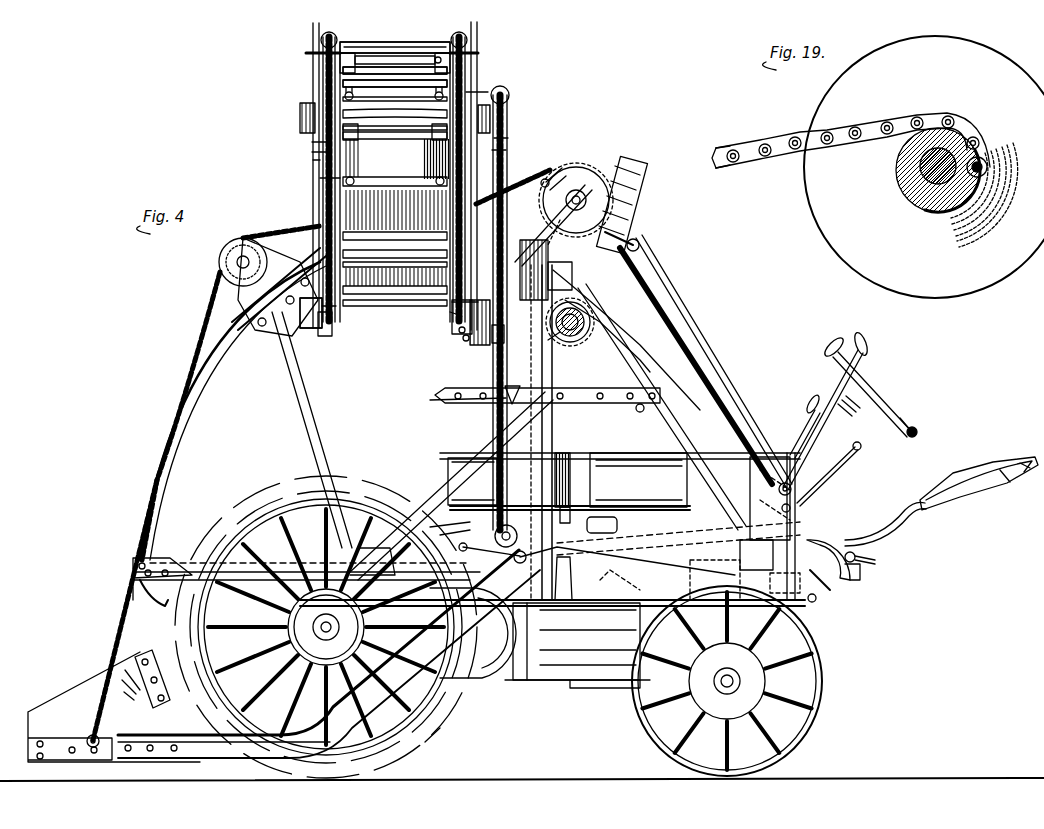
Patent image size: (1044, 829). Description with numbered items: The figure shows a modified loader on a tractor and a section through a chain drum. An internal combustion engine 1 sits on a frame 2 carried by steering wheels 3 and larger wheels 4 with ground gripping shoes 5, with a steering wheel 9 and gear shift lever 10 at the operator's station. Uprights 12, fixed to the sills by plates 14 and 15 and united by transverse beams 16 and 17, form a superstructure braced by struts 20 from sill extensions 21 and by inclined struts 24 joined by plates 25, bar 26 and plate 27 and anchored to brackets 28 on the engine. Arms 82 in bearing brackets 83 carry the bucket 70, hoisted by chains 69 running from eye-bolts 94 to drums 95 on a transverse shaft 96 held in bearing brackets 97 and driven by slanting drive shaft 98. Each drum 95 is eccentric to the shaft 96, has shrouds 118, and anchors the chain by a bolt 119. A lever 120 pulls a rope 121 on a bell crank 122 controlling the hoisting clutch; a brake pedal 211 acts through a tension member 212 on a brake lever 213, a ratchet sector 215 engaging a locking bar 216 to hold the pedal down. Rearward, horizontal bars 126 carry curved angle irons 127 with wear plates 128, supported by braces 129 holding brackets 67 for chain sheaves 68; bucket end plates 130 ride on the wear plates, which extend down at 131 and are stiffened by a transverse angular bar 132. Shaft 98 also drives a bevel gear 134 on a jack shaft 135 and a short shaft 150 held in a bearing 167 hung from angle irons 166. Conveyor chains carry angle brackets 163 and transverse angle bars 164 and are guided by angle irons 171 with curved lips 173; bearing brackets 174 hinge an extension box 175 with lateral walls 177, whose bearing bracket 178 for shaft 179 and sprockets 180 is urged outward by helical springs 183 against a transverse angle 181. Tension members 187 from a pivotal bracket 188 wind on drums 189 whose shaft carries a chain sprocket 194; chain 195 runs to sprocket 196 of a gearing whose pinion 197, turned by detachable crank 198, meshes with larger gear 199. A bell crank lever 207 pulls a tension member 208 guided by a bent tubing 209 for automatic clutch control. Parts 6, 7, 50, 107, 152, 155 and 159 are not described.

In FIG. 4, the engine 1 is at (584, 676).
In FIG. 4, the frame member 2 is at (600, 582).
In FIG. 4, the rear wheel 3 is at (822, 682).
In FIG. 4, the frame bar 4 is at (420, 742).
In FIG. 4, the frame bar 5 is at (446, 718).
In FIG. 4, the front wheel hub 6 is at (300, 636).
In FIG. 4, the seat 7 is at (986, 460).
In FIG. 4, the handle grip 9 is at (916, 430).
In FIG. 4, the control rod 10 is at (862, 448).
In FIG. 4, the upright post 12 is at (540, 372).
In FIG. 4, the frame bar 14 is at (564, 576).
In FIG. 4, the brace bar 15 is at (704, 446).
In FIG. 4, the bracket 16 is at (560, 276).
In FIG. 4, the bracket 17 is at (496, 346).
In FIG. 4, the bracket 20 is at (532, 536).
In FIG. 4, the engine casing 21 is at (550, 606).
In FIG. 4, the diagonal brace 24 is at (424, 472).
In FIG. 4, the cross plate 25 is at (558, 406).
In FIG. 4, the bracket 26 is at (594, 406).
In FIG. 4, the bolt 27 is at (632, 412).
In FIG. 4, the link 28 is at (440, 526).
In FIG. 4, the axle bracket 50 is at (383, 562).
In FIG. 4, the bracket arm 67 is at (258, 284).
In FIG. 4, the idler sprocket 68 is at (219, 260).
In FIG. 4, the drive chain 69 is at (208, 298).
In FIG. 19, the drive chain 69 is at (719, 169).
In FIG. 4, the draft bar 70 is at (58, 690).
In FIG. 4, the lower frame rail 82 is at (196, 732).
In FIG. 4, the connecting rod 83 is at (552, 548).
In FIG. 4, the chain anchor 94 is at (96, 732).
In FIG. 4, the sprocket 95 is at (578, 192).
In FIG. 19, the sprocket 95 is at (804, 174).
In FIG. 4, the sprocket hub 96 is at (608, 190).
In FIG. 19, the sprocket hub 96 is at (925, 166).
In FIG. 4, the support bar 97 is at (532, 244).
In FIG. 4, the link 98 is at (572, 344).
In FIG. 4, the gear housing 107 is at (462, 690).
In FIG. 19, the sprocket disc 118 is at (818, 222).
In FIG. 19, the chain pin 119 is at (988, 168).
In FIG. 4, the steering handle 120 is at (862, 376).
In FIG. 4, the brace bar 121 is at (712, 354).
In FIG. 4, the pivot 122 is at (640, 250).
In FIG. 4, the front traction wheel 126 is at (240, 520).
In FIG. 4, the curved frame arch 127 is at (233, 411).
In FIG. 4, the chain run 128 is at (152, 446).
In FIG. 4, the strut 129 is at (318, 420).
In FIG. 4, the bracket plate 130 is at (168, 652).
In FIG. 4, the bracket 131 is at (140, 596).
In FIG. 4, the hook 132 is at (166, 604).
In FIG. 4, the rod 134 is at (592, 332).
In FIG. 4, the gear 135 is at (578, 336).
In FIG. 4, the block 150 is at (480, 346).
In FIG. 4, the bracket 152 is at (530, 250).
In FIG. 4, the rod 155 is at (606, 328).
In FIG. 4, the elevator frame rail 159 is at (328, 180).
In FIG. 4, the roller 163 is at (440, 300).
In FIG. 4, the cross bar 164 is at (386, 308).
In FIG. 4, the pin 166 is at (464, 340).
In FIG. 4, the pin 167 is at (458, 332).
In FIG. 4, the bracket 171 is at (322, 330).
In FIG. 4, the bracket 173 is at (478, 304).
In FIG. 4, the bracket 174 is at (314, 322).
In FIG. 4, the elevator 175 is at (306, 170).
In FIG. 4, the sprocket 177 is at (479, 30).
In FIG. 4, the pin 178 is at (437, 56).
In FIG. 4, the cross bar 179 is at (395, 71).
In FIG. 4, the shaft 180 is at (472, 52).
In FIG. 4, the cross bar 181 is at (358, 114).
In FIG. 4, the hook 183 is at (360, 98).
In FIG. 4, the bearing 187 is at (500, 138).
In FIG. 4, the bearing cap 188 is at (496, 150).
In FIG. 4, the disc 189 is at (302, 128).
In FIG. 4, the elevator chain 194 is at (510, 114).
In FIG. 4, the bar 195 is at (468, 399).
In FIG. 4, the gear case 196 is at (472, 481).
In FIG. 4, the gear 197 is at (562, 454).
In FIG. 4, the block 198 is at (592, 518).
In FIG. 4, the gear case 199 is at (638, 480).
In FIG. 4, the pin 207 is at (458, 320).
In FIG. 4, the gear 208 is at (566, 308).
In FIG. 4, the arm 209 is at (548, 178).
In FIG. 4, the lever 211 is at (874, 560).
In FIG. 4, the brace bar 212 is at (712, 392).
In FIG. 4, the bracket 213 is at (798, 516).
In FIG. 4, the link 215 is at (830, 590).
In FIG. 4, the pin 216 is at (814, 604).